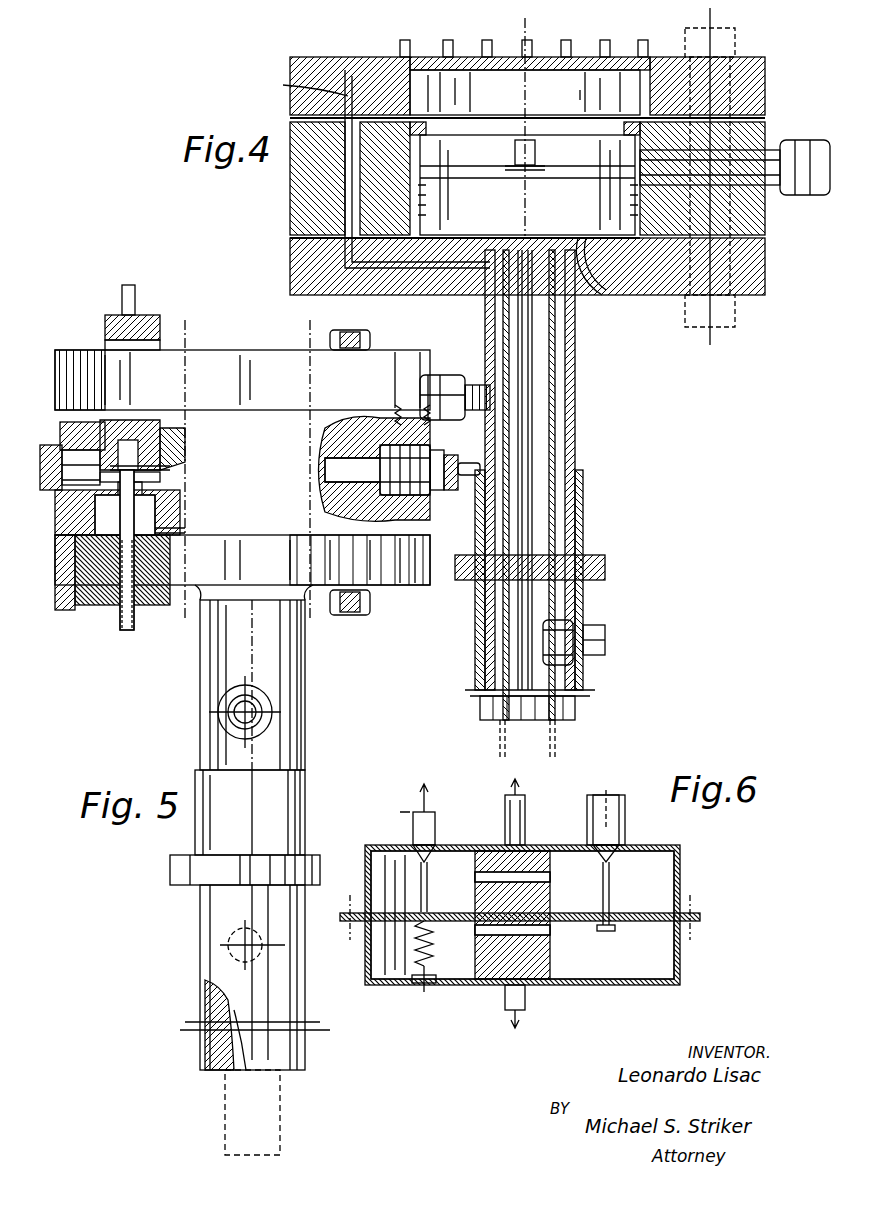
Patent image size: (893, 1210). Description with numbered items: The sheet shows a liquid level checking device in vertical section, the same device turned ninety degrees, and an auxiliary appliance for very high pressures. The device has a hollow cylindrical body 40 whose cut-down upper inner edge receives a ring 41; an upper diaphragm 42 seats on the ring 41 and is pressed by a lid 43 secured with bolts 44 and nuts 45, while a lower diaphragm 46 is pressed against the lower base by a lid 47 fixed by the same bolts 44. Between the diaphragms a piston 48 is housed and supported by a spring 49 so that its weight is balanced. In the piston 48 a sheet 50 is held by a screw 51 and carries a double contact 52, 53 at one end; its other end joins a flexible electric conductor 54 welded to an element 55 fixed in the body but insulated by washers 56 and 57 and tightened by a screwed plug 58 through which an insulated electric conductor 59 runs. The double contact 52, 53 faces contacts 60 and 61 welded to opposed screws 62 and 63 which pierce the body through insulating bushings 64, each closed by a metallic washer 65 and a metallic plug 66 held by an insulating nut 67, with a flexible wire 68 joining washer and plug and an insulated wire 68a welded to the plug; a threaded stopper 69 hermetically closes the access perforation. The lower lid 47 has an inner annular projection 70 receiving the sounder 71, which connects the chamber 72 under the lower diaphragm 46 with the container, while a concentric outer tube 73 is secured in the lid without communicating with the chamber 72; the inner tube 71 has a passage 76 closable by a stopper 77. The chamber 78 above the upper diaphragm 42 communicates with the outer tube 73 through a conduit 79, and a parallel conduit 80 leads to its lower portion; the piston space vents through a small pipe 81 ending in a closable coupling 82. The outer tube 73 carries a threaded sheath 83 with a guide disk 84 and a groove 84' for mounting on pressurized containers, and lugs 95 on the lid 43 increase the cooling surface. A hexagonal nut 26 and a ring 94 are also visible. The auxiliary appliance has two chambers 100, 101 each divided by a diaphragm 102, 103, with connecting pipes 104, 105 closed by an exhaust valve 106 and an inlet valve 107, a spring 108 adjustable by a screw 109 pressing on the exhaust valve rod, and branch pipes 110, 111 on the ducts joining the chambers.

In FIG. 5, the bolt 26 is at (150, 320).
In FIG. 4, the hollow cylindrical body 40 is at (765, 128).
In FIG. 5, the hollow cylindrical body 40 is at (262, 450).
In FIG. 4, the ring 41 is at (648, 78).
In FIG. 4, the diaphragm 42 is at (578, 62).
In FIG. 4, the lid 43 is at (312, 66).
In FIG. 5, the lid 43 is at (82, 355).
In FIG. 4, the bolts 44 is at (712, 31).
In FIG. 5, the bolts 44 is at (355, 331).
In FIG. 4, the nuts 45 is at (735, 43).
In FIG. 5, the nuts 45 is at (370, 342).
In FIG. 4, the diaphragm 46 is at (466, 238).
In FIG. 4, the lid 47 is at (765, 270).
In FIG. 5, the lid 47 is at (405, 575).
In FIG. 4, the piston 48 is at (608, 245).
In FIG. 4, the spring 49 is at (640, 248).
In FIG. 4, the sheet 50 is at (518, 162).
In FIG. 5, the sheet 50 is at (162, 466).
In FIG. 4, the screw 51 is at (522, 72).
In FIG. 5, the double contact 52 is at (152, 456).
In FIG. 5, the double contact 53 is at (120, 466).
In FIG. 5, the flexible electric conductor 54 is at (375, 468).
In FIG. 5, the element 55 is at (396, 420).
In FIG. 5, the washer 56 is at (392, 497).
In FIG. 5, the washer 57 is at (410, 497).
In FIG. 5, the screwed plug 58 is at (452, 488).
In FIG. 5, the insulated electric conductor 59 is at (468, 463).
In FIG. 5, the contact 60 is at (62, 442).
In FIG. 5, the contact 61 is at (105, 512).
In FIG. 5, the screw 62 is at (126, 428).
In FIG. 5, the screw 63 is at (142, 482).
In FIG. 5, the insulating bushing 64 is at (150, 496).
In FIG. 5, the metallic washer 65 is at (85, 585).
In FIG. 5, the metallic plug 66 is at (170, 530).
In FIG. 5, the insulating nut 67 is at (145, 600).
In FIG. 5, the flexible wire 68 is at (158, 515).
In FIG. 5, the insulated wire 68a is at (125, 620).
In FIG. 5, the threaded stopper 69 is at (60, 492).
In FIG. 4, the inner annular projection 70 is at (584, 292).
In FIG. 4, the sounder 71 is at (556, 442).
In FIG. 5, the sounder 71 is at (226, 1020).
In FIG. 4, the chamber 72 is at (626, 300).
In FIG. 4, the tube 73 is at (577, 410).
In FIG. 5, the tube 73 is at (305, 750).
In FIG. 4, the passage 76 is at (575, 632).
In FIG. 5, the passage 76 is at (232, 938).
In FIG. 4, the stopper 77 is at (606, 634).
In FIG. 4, the chamber 78 is at (456, 80).
In FIG. 4, the conduit 79 is at (350, 82).
In FIG. 4, the conduit 80 is at (303, 85).
In FIG. 4, the small pipe 81 is at (768, 188).
In FIG. 4, the closable coupling 82 is at (806, 197).
In FIG. 4, the outwardly threaded sheath 83 is at (583, 506).
In FIG. 5, the outwardly threaded sheath 83 is at (305, 828).
In FIG. 4, the guide disk 84 is at (545, 550).
In FIG. 5, the guide disk 84 is at (257, 853).
In FIG. 4, the groove 84' is at (453, 602).
In FIG. 5, the groove 84' is at (195, 905).
In FIG. 4, the flange ring 94 is at (606, 570).
In FIG. 4, the lugs 95 is at (550, 56).
In FIG. 6, the chamber 100 is at (418, 896).
In FIG. 6, the chamber 101 is at (656, 889).
In FIG. 6, the diaphragm 102 is at (378, 975).
In FIG. 6, the diaphragm 103 is at (632, 930).
In FIG. 6, the connecting pipe 104 is at (436, 822).
In FIG. 6, the connecting pipe 105 is at (626, 811).
In FIG. 6, the exhaust valve 106 is at (432, 844).
In FIG. 6, the inlet valve 107 is at (612, 860).
In FIG. 6, the spring 108 is at (433, 950).
In FIG. 6, the nut 109 is at (426, 992).
In FIG. 6, the branch pipe 110 is at (522, 825).
In FIG. 6, the branch pipe 111 is at (526, 996).